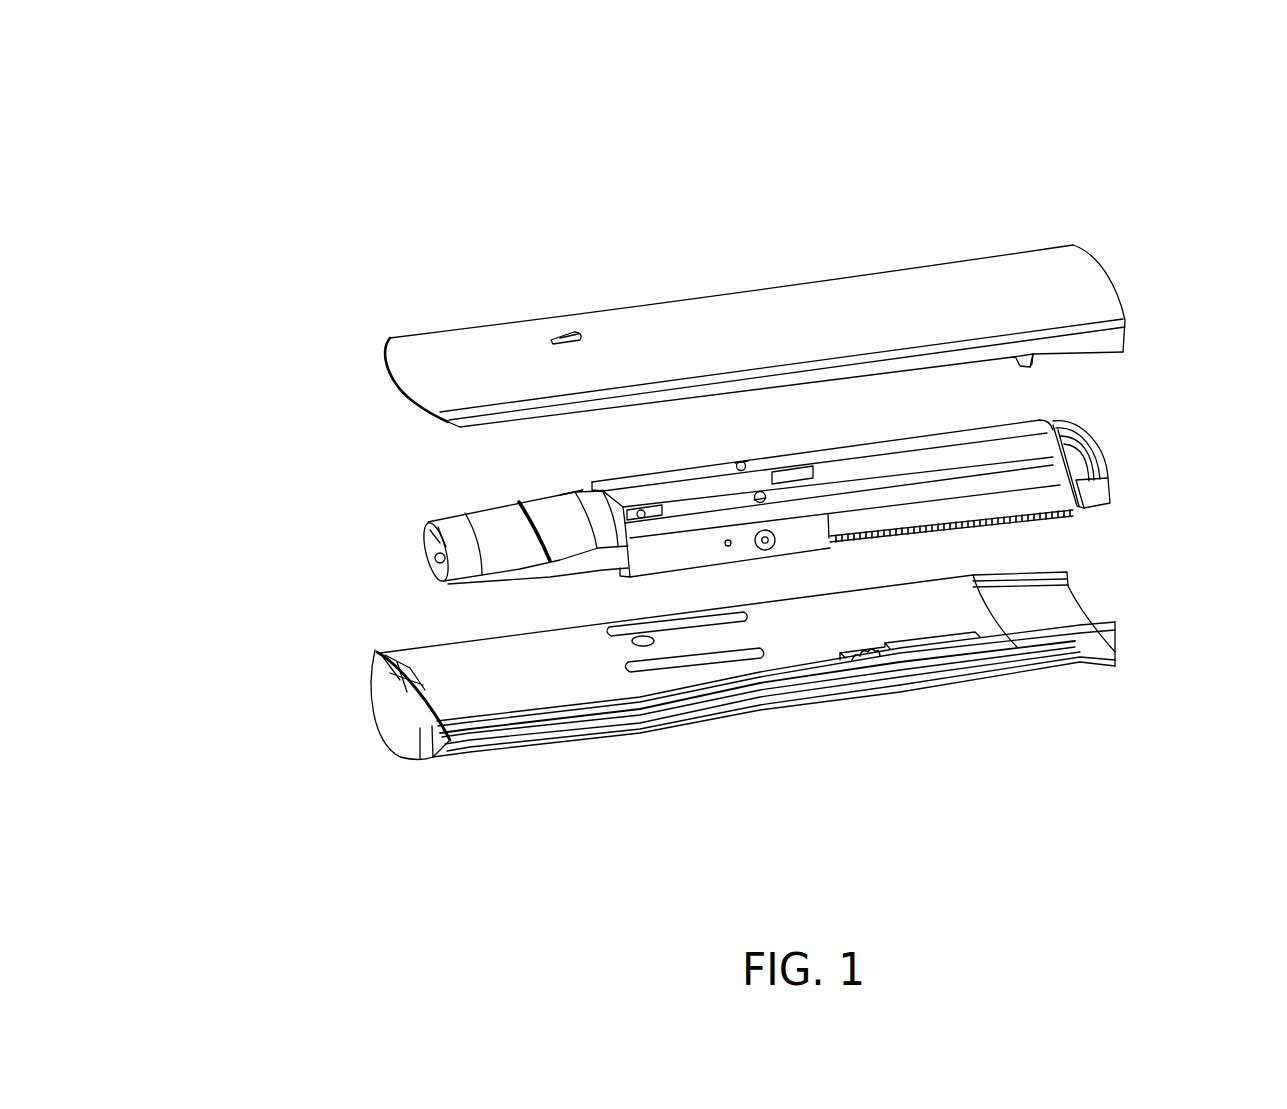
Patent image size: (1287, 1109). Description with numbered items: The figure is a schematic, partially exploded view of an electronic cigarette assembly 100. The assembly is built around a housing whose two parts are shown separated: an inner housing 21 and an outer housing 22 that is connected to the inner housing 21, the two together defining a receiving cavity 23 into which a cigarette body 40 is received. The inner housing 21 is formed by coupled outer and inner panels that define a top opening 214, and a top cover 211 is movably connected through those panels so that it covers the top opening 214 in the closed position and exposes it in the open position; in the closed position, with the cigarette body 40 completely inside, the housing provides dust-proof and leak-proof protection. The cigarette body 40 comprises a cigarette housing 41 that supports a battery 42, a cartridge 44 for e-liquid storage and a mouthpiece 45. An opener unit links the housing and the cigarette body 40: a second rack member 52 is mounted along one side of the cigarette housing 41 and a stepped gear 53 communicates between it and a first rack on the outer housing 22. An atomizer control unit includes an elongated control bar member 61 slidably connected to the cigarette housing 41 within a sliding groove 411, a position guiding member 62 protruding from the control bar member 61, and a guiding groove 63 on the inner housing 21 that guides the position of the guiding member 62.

The electronic cigarette assembly 100 is at (1143, 126).
The outer housing 22 is at (790, 315).
The inner housing 21 is at (614, 728).
The top cover 211 is at (395, 718).
The top opening 214 is at (377, 668).
The receiving cavity 23 is at (1052, 628).
The cigarette body 40 is at (577, 497).
The cigarette housing 41 is at (1071, 516).
The sliding groove 411 is at (666, 473).
The battery 42 is at (1075, 437).
The cartridge 44 is at (573, 497).
The mouthpiece 45 is at (463, 560).
The second rack member 52 is at (1043, 501).
The gear 53 is at (872, 664).
The control bar member 61 is at (739, 460).
The position guiding member 62 is at (756, 455).
The guiding groove 63 is at (680, 660).